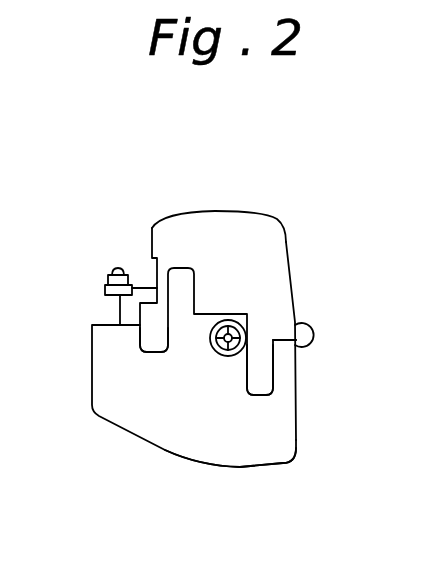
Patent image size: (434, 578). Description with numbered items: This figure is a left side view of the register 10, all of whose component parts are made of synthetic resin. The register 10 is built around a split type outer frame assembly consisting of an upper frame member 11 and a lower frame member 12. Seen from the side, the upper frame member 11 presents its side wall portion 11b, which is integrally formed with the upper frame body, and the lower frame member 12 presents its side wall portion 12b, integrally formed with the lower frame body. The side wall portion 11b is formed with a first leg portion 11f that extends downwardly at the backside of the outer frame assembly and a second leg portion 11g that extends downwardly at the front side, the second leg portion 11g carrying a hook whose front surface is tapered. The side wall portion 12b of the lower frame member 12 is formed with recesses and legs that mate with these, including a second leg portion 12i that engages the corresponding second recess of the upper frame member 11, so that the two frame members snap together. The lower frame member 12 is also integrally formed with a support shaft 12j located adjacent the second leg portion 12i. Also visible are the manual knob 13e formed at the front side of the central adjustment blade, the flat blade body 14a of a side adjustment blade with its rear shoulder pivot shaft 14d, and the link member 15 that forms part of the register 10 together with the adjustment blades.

The register 10 is at (309, 216).
The upper frame member 11 is at (222, 213).
The side wall portion 11b is at (245, 233).
The first leg portion 11f is at (147, 337).
The second leg portion 11g is at (270, 378).
The lower frame member 12 is at (211, 465).
The side wall portion 12b is at (261, 456).
The second leg portion 12i is at (248, 328).
The support shaft 12j is at (248, 336).
The manual knob 13e is at (300, 348).
The flat blade body 14a is at (127, 312).
The pivot shaft 14d is at (113, 269).
The link member 15 is at (105, 287).